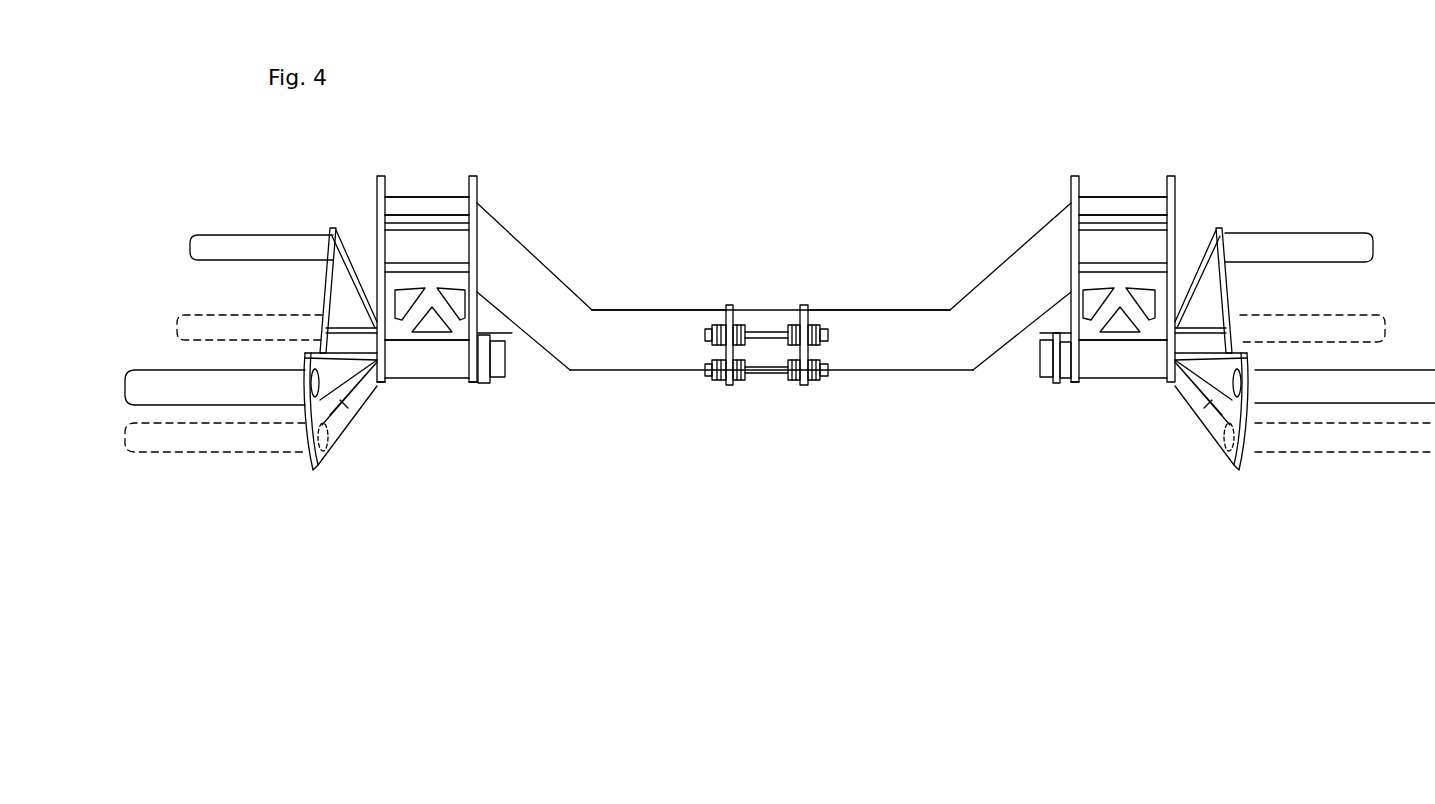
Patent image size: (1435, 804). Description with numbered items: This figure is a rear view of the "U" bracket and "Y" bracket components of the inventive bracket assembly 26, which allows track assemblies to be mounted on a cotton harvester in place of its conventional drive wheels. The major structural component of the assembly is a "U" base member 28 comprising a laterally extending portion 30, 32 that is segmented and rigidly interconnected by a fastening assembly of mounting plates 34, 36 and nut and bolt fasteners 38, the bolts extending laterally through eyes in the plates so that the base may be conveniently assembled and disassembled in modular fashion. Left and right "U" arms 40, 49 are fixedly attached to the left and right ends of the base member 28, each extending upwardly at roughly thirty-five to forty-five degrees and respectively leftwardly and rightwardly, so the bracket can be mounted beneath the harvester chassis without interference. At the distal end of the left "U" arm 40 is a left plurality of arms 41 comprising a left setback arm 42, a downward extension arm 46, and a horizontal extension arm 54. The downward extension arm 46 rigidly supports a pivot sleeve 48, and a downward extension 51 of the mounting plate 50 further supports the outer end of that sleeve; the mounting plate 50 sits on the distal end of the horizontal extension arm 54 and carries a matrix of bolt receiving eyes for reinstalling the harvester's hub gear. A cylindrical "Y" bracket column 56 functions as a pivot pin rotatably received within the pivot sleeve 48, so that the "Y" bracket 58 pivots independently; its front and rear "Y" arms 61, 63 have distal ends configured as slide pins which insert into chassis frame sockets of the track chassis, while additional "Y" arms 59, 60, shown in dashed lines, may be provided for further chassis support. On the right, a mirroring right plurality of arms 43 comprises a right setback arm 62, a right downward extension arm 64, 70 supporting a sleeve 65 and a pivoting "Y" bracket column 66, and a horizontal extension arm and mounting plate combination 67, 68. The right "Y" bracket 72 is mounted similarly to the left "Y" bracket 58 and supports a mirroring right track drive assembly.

The "U" bracket assembly 26 is at (843, 235).
The "U" base member 28 is at (665, 388).
The laterally extending portion 30 is at (636, 332).
The laterally extending portion 32 is at (897, 355).
The mounting plate 34 is at (729, 305).
The mounting plate 36 is at (804, 305).
The nut and bolt fasteners 38 is at (767, 375).
The left "U" arm 40 is at (530, 272).
The left plurality of arms 41 is at (411, 170).
The left setback arm 42 is at (473, 177).
The right plurality of arms 43 is at (1120, 170).
The downward extension arm 46 is at (473, 385).
The pivot sleeve 48 is at (427, 375).
The right "U" arm 49 is at (987, 291).
The mounting plate 50 is at (380, 176).
The downward extension of plate 51 is at (386, 385).
The horizontal extension arm 54 is at (437, 200).
The "Y" bracket column 56 is at (517, 368).
The "Y" bracket 58 is at (347, 428).
The additional "Y" arm 59 is at (194, 448).
The additional "Y" arm 60 is at (192, 322).
The front "Y" arm 61 is at (144, 380).
The right setback arm 62 is at (1073, 177).
The rear "Y" arm 63 is at (220, 243).
The right downward extension arm 64 is at (1077, 388).
The sleeve 65 is at (1128, 373).
The "Y" bracket column 66 is at (1040, 365).
The horizontal extension arm 67 is at (1137, 205).
The mounting plate 68 is at (1172, 177).
The right downward extension arm 70 is at (1170, 388).
The right "Y" bracket 72 is at (1213, 425).